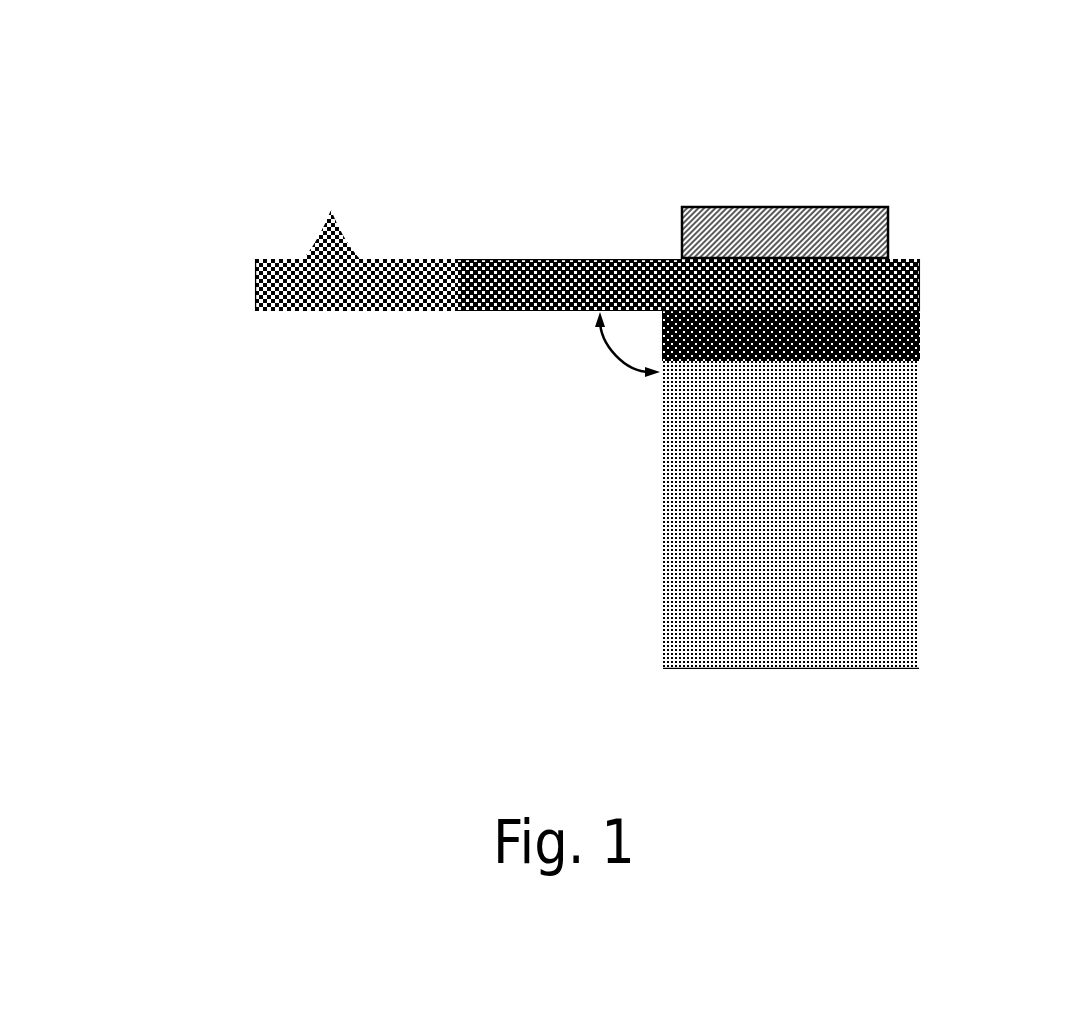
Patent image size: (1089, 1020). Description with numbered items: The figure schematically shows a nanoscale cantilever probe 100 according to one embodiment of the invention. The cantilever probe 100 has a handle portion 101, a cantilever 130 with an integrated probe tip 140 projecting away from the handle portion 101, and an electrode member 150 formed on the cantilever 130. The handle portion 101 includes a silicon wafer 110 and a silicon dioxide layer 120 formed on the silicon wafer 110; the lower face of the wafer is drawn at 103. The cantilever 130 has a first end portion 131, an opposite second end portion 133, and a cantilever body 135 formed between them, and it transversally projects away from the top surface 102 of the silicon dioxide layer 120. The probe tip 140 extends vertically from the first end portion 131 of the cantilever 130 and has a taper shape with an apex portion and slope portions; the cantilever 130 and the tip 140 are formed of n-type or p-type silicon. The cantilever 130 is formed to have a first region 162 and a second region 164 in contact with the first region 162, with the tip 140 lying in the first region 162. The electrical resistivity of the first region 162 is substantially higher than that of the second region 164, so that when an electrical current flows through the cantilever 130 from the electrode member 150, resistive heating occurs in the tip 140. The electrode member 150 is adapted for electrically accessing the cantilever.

The cantilever probe 100 is at (615, 51).
The handle portion 101 is at (768, 481).
The top surface 102 is at (918, 310).
The bottom surface of substrate 103 is at (870, 668).
The silicon wafer 110 is at (895, 548).
The silicon dioxide layer 120 is at (893, 342).
The cantilever 130 is at (596, 329).
The first end portion 131 is at (257, 288).
The second end portion 133 is at (915, 289).
The cantilever body 135 is at (512, 258).
The probe tip 140 is at (338, 221).
The electrode member 150 is at (792, 218).
The first region 162 is at (350, 293).
The second region 164 is at (513, 293).